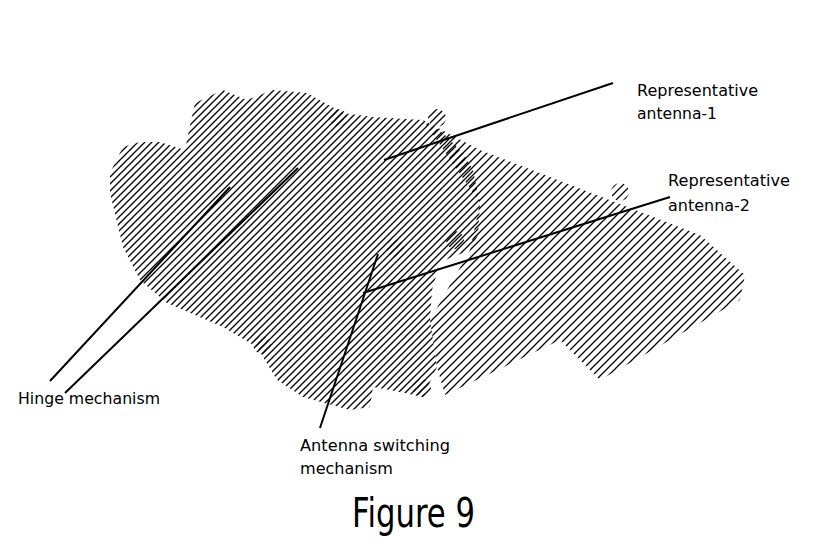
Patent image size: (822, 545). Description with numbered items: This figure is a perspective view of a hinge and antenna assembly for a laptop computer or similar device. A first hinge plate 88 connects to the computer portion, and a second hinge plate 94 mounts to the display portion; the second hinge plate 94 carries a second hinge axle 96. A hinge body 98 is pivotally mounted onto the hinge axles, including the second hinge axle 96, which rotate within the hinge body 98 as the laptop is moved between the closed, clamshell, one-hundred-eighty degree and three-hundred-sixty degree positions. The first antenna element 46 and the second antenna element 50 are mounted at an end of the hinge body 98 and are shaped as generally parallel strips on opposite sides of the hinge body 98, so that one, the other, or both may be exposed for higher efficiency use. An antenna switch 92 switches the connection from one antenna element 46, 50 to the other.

The second hinge axle 96 is at (338, 115).
The second antenna element 50 is at (437, 113).
The hinge body 98 is at (618, 186).
The first hinge plate 88 is at (260, 343).
The second hinge plate 94 is at (422, 388).
The antenna switch 92 is at (393, 245).
The first antenna element 46 is at (453, 237).